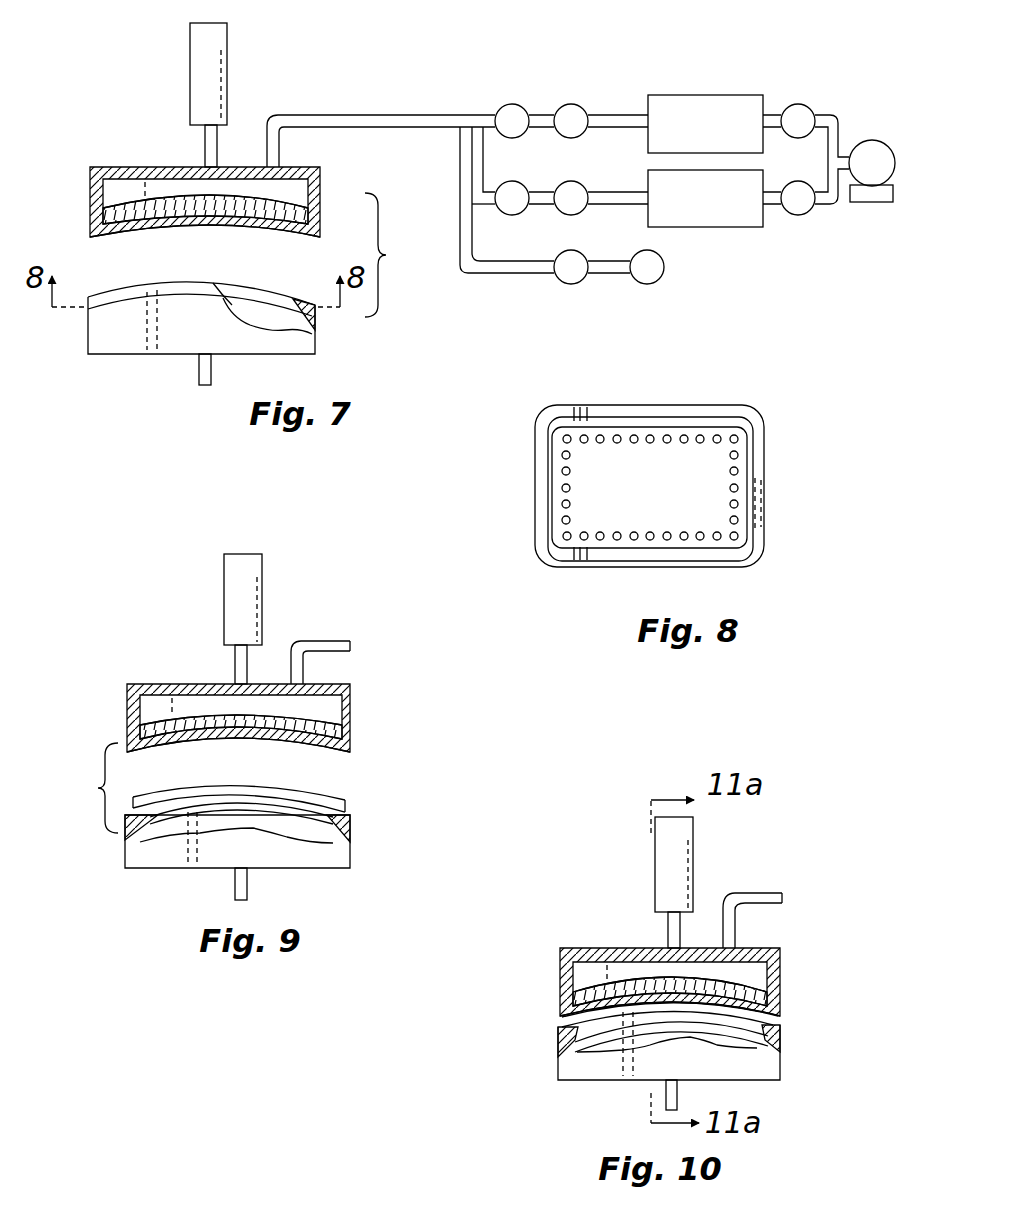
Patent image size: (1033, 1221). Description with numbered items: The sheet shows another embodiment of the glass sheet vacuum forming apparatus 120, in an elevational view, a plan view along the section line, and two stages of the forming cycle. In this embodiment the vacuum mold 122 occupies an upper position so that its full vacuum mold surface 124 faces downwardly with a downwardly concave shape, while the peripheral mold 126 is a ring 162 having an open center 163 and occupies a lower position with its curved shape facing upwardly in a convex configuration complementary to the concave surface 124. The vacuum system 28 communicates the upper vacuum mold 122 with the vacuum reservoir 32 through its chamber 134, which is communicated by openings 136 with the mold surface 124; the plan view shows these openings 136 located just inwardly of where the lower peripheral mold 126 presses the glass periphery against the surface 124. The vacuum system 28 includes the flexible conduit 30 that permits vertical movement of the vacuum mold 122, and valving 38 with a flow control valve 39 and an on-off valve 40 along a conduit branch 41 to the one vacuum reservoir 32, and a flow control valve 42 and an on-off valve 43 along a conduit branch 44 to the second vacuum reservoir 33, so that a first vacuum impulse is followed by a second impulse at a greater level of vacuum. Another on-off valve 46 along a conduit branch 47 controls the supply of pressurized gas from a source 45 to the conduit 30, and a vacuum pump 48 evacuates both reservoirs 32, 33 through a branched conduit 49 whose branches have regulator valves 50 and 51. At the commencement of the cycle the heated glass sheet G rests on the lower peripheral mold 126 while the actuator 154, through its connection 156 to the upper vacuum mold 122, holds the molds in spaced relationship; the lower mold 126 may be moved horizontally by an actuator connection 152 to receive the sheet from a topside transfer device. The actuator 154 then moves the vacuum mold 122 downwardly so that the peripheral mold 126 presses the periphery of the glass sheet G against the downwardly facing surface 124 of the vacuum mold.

In FIG. 7, the apparatus 120 is at (255, 222).
In FIG. 8, the apparatus 120 is at (694, 464).
In FIG. 9, the apparatus 120 is at (244, 726).
In FIG. 10, the apparatus 120 is at (680, 975).
In FIG. 7, the vacuum mold 122 is at (197, 204).
In FIG. 8, the vacuum mold 122 is at (651, 484).
In FIG. 9, the vacuum mold 122 is at (276, 694).
In FIG. 10, the vacuum mold 122 is at (712, 950).
In FIG. 7, the vacuum mold surface 124 is at (168, 224).
In FIG. 8, the vacuum mold surface 124 is at (603, 436).
In FIG. 9, the vacuum mold surface 124 is at (340, 752).
In FIG. 10, the vacuum mold surface 124 is at (785, 1006).
In FIG. 7, the peripheral mold 126 is at (194, 351).
In FIG. 8, the peripheral mold 126 is at (694, 486).
In FIG. 9, the peripheral mold 126 is at (238, 852).
In FIG. 10, the peripheral mold 126 is at (680, 1072).
In FIG. 7, the chamber 134 is at (285, 192).
In FIG. 9, the chamber 134 is at (195, 705).
In FIG. 10, the chamber 134 is at (652, 973).
In FIG. 7, the openings 136 is at (220, 214).
In FIG. 8, the openings 136 is at (634, 540).
In FIG. 9, the openings 136 is at (320, 722).
In FIG. 10, the openings 136 is at (628, 994).
In FIG. 7, the actuator connection 152 is at (199, 378).
In FIG. 9, the actuator connection 152 is at (248, 884).
In FIG. 10, the actuator connection 152 is at (665, 1093).
In FIG. 7, the actuator 154 is at (220, 68).
In FIG. 9, the actuator 154 is at (260, 595).
In FIG. 10, the actuator 154 is at (693, 848).
In FIG. 7, the connection 156 is at (206, 145).
In FIG. 9, the connection 156 is at (248, 662).
In FIG. 10, the connection 156 is at (682, 925).
In FIG. 7, the ring 162 is at (316, 309).
In FIG. 8, the ring 162 is at (757, 478).
In FIG. 9, the ring 162 is at (351, 822).
In FIG. 10, the ring 162 is at (782, 1033).
In FIG. 7, the open center 163 is at (238, 288).
In FIG. 8, the open center 163 is at (741, 530).
In FIG. 9, the open center 163 is at (152, 820).
In FIG. 10, the open center 163 is at (640, 1024).
In FIG. 7, the conduit 30 is at (285, 110).
In FIG. 9, the conduit 30 is at (323, 635).
In FIG. 10, the conduit 30 is at (757, 893).
In FIG. 7, the vacuum system 28 is at (670, 172).
In FIG. 7, the valving 38 is at (521, 94).
In FIG. 7, the flow control valve 39 is at (500, 108).
In FIG. 7, the on-off valve 40 is at (575, 105).
In FIG. 7, the conduit branch 41 is at (616, 112).
In FIG. 7, the vacuum reservoir 32 is at (680, 100).
In FIG. 7, the second vacuum reservoir 33 is at (705, 228).
In FIG. 7, the flow control valve 42 is at (523, 182).
In FIG. 7, the on-off valve 43 is at (571, 182).
In FIG. 7, the conduit branch 44 is at (618, 191).
In FIG. 7, the pressurized gas source 45 is at (665, 264).
In FIG. 7, the on-off valve 46 is at (575, 285).
In FIG. 7, the conduit branch 47 is at (503, 276).
In FIG. 7, the vacuum pump 48 is at (866, 141).
In FIG. 7, the branched conduit 49 is at (842, 150).
In FIG. 7, the regulator valve 50 is at (805, 106).
In FIG. 7, the regulator valve 51 is at (800, 217).
In FIG. 9, the glass sheet G is at (346, 801).
In FIG. 10, the glass sheet G is at (565, 1014).